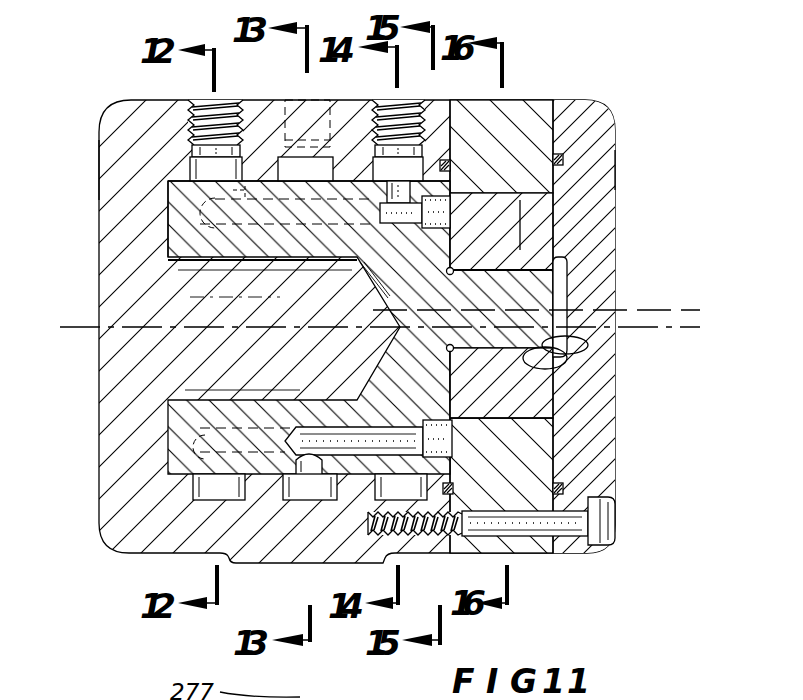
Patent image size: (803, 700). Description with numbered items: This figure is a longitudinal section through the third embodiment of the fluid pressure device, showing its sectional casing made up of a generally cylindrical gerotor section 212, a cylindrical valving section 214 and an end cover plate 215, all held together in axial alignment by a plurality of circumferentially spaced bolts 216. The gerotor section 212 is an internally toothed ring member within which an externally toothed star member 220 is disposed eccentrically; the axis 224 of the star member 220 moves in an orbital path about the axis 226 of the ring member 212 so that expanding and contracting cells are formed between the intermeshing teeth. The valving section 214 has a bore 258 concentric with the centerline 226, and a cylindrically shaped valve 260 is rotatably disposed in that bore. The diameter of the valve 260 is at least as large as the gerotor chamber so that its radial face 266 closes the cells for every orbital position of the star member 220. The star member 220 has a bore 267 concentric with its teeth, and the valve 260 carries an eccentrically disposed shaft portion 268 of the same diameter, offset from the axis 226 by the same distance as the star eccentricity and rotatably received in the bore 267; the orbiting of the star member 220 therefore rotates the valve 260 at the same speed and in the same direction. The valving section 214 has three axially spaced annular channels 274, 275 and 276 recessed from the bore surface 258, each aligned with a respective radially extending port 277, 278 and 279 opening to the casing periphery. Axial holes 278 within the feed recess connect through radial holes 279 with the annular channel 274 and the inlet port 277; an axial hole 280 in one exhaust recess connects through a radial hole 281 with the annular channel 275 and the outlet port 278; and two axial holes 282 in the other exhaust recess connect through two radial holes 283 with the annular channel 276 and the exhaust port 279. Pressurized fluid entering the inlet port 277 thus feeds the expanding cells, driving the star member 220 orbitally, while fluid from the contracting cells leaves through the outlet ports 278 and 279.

The gerotor section 212 is at (532, 110).
The valving section 214 is at (99, 168).
The end cover plate 215 is at (614, 166).
The bolts 216 is at (606, 523).
The star member 220 is at (537, 222).
The axis of star member 224 is at (665, 310).
The axis of ring member 226 is at (680, 327).
The bore 258 is at (180, 470).
The valve 260 is at (168, 222).
The radial face of valve 266 is at (452, 464).
The star member bore 267 is at (588, 345).
The eccentric shaft portion 268 is at (566, 370).
The annular channel 274 is at (196, 170).
The annular channel 275 is at (280, 168).
The annular channel 276 is at (375, 168).
The inlet port 277 is at (205, 110).
The outlet port / axial holes 278 is at (296, 87).
The exhaust port / radial holes 279 is at (386, 104).
The hole 280 is at (373, 440).
The radially extending hole 281 is at (312, 466).
The holes 282 is at (390, 212).
The radially extending holes 283 is at (385, 198).